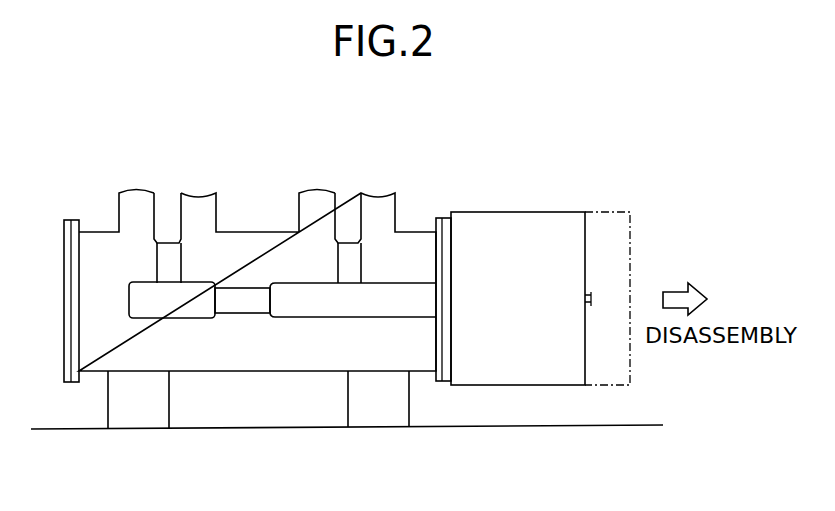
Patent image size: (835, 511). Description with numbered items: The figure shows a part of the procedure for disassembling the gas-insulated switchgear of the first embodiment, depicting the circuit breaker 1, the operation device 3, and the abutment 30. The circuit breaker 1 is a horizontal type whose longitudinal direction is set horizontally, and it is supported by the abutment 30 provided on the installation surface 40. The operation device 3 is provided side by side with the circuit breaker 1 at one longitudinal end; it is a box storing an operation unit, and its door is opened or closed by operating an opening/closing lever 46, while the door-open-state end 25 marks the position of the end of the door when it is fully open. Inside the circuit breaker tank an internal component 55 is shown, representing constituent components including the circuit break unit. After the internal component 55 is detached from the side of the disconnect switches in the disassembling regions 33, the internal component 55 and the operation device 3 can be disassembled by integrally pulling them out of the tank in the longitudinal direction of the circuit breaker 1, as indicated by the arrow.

The circuit breaker 1 is at (88, 300).
The operation device 3 is at (505, 222).
The door-open-state end 25 is at (630, 247).
The abutment 30 is at (355, 402).
The disassembling regions 33 is at (347, 242).
The installation surface 40 is at (637, 426).
The opening/closing lever 46 is at (591, 306).
The internal component 55 is at (423, 298).